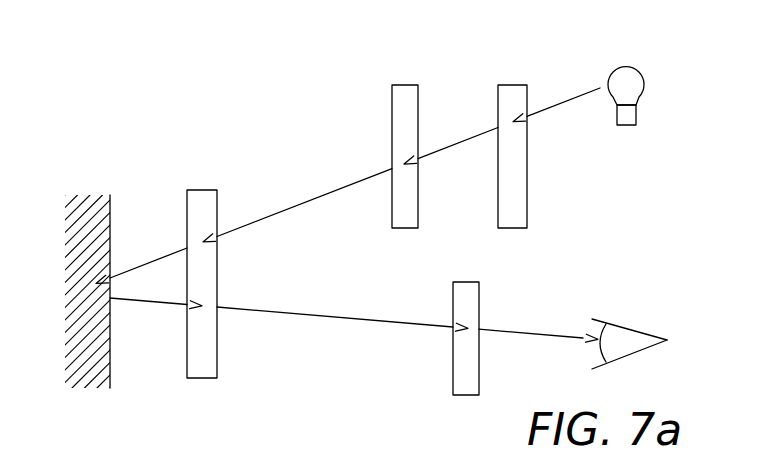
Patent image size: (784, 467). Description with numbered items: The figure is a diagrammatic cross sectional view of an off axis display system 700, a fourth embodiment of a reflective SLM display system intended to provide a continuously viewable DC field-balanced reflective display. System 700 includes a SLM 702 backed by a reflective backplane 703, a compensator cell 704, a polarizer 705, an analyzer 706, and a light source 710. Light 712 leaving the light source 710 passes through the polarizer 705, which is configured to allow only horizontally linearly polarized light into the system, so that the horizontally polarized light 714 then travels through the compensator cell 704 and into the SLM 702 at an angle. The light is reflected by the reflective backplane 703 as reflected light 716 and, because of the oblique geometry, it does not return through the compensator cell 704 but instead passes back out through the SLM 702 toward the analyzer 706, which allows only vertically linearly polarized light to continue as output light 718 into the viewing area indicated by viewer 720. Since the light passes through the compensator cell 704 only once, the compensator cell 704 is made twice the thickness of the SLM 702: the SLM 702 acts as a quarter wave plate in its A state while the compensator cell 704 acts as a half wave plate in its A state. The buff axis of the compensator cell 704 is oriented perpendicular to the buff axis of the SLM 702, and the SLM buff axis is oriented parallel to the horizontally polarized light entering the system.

The off axis display system 700 is at (175, 113).
The SLM 702 is at (205, 378).
The reflective backplane 703 is at (110, 240).
The compensator cell 704 is at (408, 85).
The polarizer 705 is at (510, 85).
The analyzer 706 is at (467, 395).
The light source 710 is at (635, 87).
The unpolarized light ray 712 is at (588, 92).
The horizontally polarized light ray 714 is at (453, 147).
The reflected light ray 716 is at (147, 303).
The transmitted light ray to viewer 718 is at (527, 328).
The viewer 720 is at (627, 327).